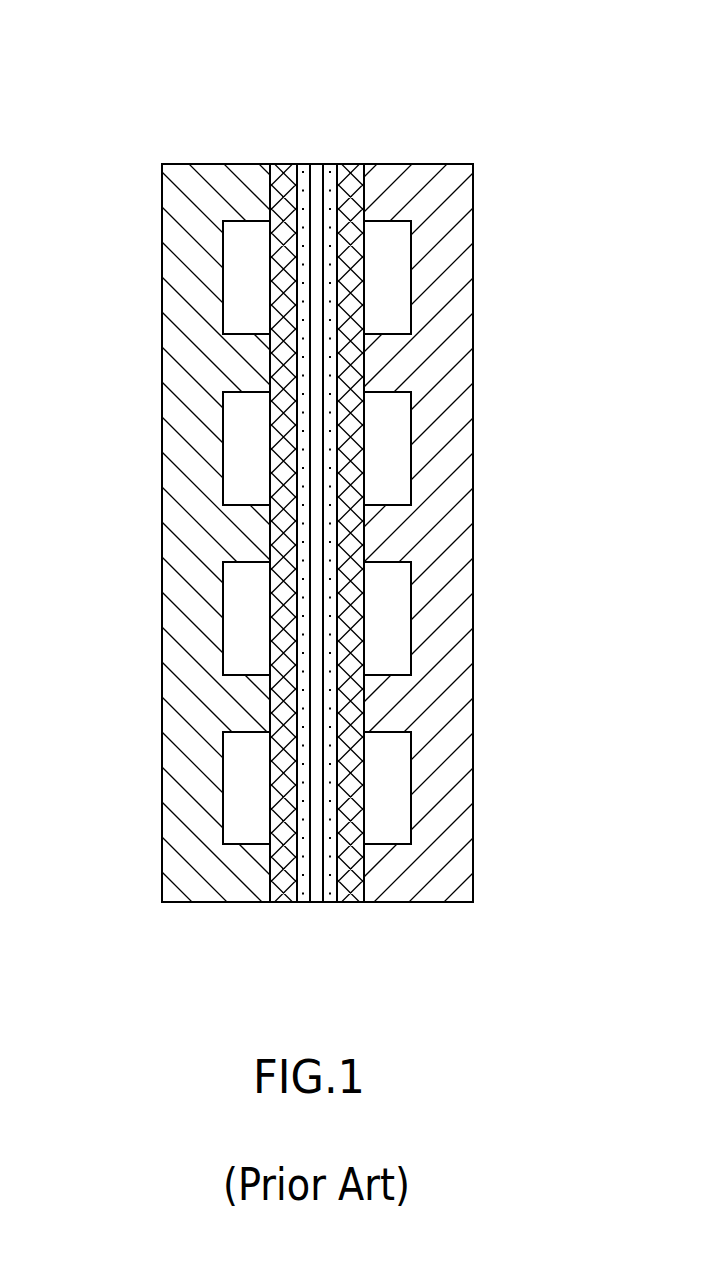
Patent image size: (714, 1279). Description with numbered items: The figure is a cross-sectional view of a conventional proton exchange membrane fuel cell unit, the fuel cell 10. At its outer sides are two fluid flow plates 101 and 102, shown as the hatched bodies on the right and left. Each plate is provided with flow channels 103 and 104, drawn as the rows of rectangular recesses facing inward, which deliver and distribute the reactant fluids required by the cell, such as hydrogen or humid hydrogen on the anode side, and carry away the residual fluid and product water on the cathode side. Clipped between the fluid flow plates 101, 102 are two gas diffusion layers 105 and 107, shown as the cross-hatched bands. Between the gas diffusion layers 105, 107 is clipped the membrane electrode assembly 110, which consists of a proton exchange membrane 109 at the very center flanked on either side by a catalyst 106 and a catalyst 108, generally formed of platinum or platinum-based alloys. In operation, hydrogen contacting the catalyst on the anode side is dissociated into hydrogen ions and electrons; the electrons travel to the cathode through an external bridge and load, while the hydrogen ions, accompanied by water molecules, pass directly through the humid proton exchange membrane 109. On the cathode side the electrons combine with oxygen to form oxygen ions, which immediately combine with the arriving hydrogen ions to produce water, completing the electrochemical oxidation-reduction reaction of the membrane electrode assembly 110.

The fuel cell 10 is at (130, 76).
The fluid flow plate 101 is at (473, 265).
The fluid flow plate 102 is at (162, 265).
The flow channel 103 is at (405, 465).
The flow channel 104 is at (230, 465).
The gas diffusion layer 105 is at (347, 902).
The catalyst 106 is at (330, 164).
The gas diffusion layer 107 is at (287, 902).
The catalyst 108 is at (305, 164).
The proton exchange membrane 109 is at (315, 164).
The membrane electrode assembly 110 is at (385, 61).